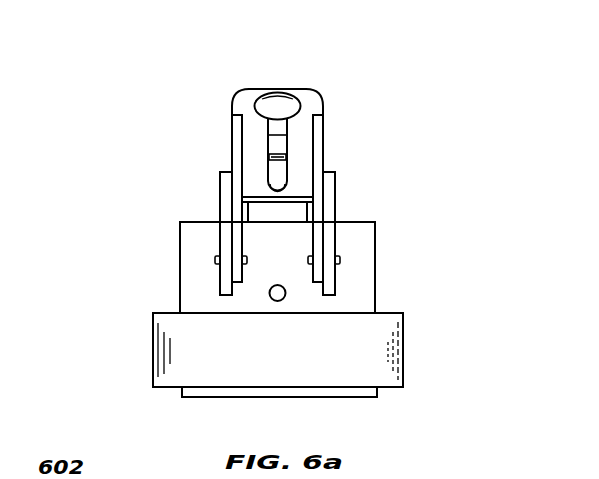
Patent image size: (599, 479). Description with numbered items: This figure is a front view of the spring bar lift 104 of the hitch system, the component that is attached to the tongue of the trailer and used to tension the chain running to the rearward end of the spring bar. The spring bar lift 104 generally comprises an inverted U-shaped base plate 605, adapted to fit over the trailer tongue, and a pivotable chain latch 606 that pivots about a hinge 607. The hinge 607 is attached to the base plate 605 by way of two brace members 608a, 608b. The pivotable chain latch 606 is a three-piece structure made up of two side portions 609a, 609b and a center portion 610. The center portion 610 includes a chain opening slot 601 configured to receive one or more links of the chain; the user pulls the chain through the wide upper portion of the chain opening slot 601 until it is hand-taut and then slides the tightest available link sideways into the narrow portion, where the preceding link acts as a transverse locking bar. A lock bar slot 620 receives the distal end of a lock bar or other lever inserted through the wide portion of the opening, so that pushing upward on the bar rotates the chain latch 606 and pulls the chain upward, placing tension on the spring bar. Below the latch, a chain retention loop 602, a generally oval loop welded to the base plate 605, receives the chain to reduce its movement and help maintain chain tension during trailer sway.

The spring bar lift 104 is at (141, 282).
The chain opening slot 601 is at (297, 105).
The chain retention loop 602 is at (393, 357).
The base plate 605 is at (380, 302).
The pivotable chain latch 606 is at (302, 134).
The hinge 607 is at (342, 260).
The brace member 608a is at (219, 177).
The brace member 608b is at (337, 177).
The side portion 609a is at (231, 137).
The side portion 609b is at (324, 147).
The center portion 610 is at (281, 88).
The lock bar slot 620 is at (268, 157).